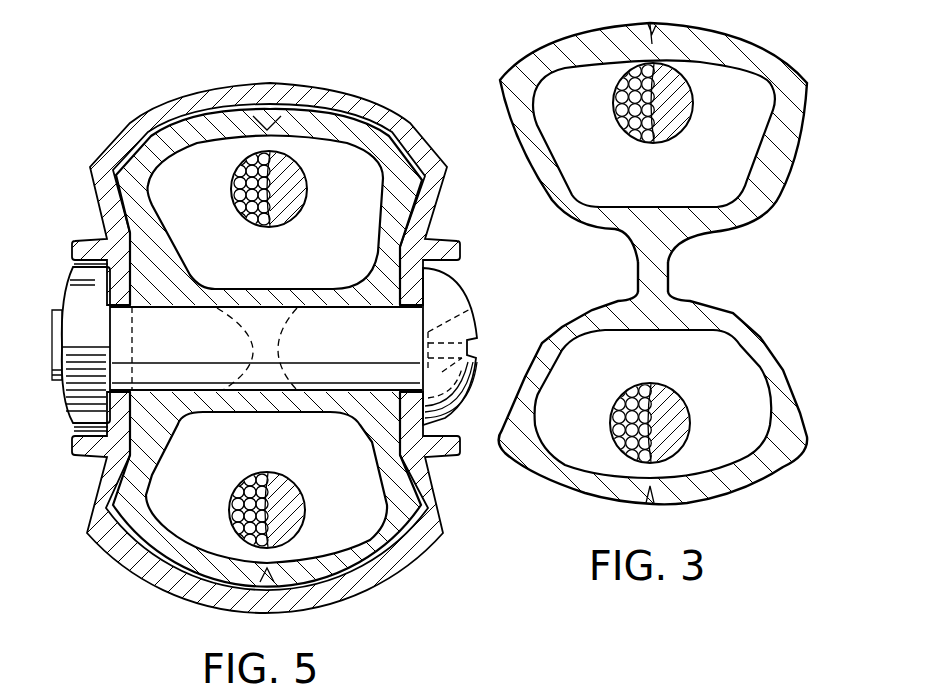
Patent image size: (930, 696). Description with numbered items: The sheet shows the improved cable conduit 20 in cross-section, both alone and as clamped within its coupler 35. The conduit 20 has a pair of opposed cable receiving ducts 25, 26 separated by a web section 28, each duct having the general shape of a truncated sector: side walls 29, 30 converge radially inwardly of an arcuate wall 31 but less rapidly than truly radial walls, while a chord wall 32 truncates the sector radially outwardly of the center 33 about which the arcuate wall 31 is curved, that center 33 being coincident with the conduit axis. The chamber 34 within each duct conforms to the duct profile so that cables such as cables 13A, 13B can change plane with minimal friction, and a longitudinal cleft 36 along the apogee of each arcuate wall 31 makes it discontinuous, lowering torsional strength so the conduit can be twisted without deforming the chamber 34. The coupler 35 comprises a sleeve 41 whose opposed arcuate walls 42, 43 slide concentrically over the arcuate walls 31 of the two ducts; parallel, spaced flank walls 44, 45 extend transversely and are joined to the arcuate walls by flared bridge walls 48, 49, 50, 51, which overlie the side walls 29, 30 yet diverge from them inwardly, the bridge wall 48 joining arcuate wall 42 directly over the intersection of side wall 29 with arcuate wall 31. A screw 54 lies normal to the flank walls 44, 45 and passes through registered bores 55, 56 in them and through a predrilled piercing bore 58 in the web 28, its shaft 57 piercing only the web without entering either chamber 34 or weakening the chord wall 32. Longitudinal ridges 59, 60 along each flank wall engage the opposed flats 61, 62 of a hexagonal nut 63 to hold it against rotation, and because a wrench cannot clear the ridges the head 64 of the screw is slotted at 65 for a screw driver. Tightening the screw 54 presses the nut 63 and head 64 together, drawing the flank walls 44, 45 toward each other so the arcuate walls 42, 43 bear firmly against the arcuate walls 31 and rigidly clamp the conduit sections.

In FIG. 3, the electrical cable 13A is at (678, 430).
In FIG. 5, the electrical cable 13A is at (300, 515).
In FIG. 3, the electrical cable 13B is at (620, 96).
In FIG. 5, the electrical cable 13B is at (307, 190).
In FIG. 3, the conduit 20 is at (740, 241).
In FIG. 5, the conduit 20 is at (395, 260).
In FIG. 3, the cable receiving duct 25 is at (797, 135).
In FIG. 5, the cable receiving duct 25 is at (402, 193).
In FIG. 3, the cable receiving duct 26 is at (780, 352).
In FIG. 5, the cable receiving duct 26 is at (407, 500).
In FIG. 3, the web section 28 is at (636, 276).
In FIG. 5, the web section 28 is at (283, 320).
In FIG. 3, the side wall 29 is at (540, 148).
In FIG. 5, the side wall 29 is at (159, 236).
In FIG. 3, the side wall 30 is at (762, 153).
In FIG. 5, the side wall 30 is at (377, 232).
In FIG. 3, the arcuate wall 31 is at (733, 42).
In FIG. 5, the arcuate wall 31 is at (366, 132).
In FIG. 3, the chord wall 32 is at (657, 213).
In FIG. 5, the chord wall 32 is at (233, 289).
In FIG. 3, the center 33 is at (655, 265).
In FIG. 5, the center 33 is at (268, 350).
In FIG. 3, the chamber 34 is at (654, 269).
In FIG. 5, the chamber 34 is at (266, 350).
In FIG. 5, the coupler 35 is at (190, 84).
In FIG. 3, the longitudinal cleft 36 is at (648, 40).
In FIG. 5, the longitudinal cleft 36 is at (266, 128).
In FIG. 5, the sleeve 41 is at (352, 84).
In FIG. 5, the arcuate wall 42 is at (291, 94).
In FIG. 5, the arcuate wall 43 is at (345, 590).
In FIG. 5, the flank wall 44 is at (130, 283).
In FIG. 5, the flank wall 45 is at (442, 407).
In FIG. 5, the bridge wall 48 is at (105, 196).
In FIG. 5, the bridge wall 49 is at (422, 206).
In FIG. 5, the bridge wall 50 is at (106, 490).
In FIG. 5, the bridge wall 51 is at (440, 525).
In FIG. 5, the screw 54 is at (460, 279).
In FIG. 5, the bore 55 is at (134, 377).
In FIG. 5, the bore 56 is at (398, 378).
In FIG. 5, the shaft 57 is at (266, 348).
In FIG. 5, the piercing bore 58 is at (236, 312).
In FIG. 5, the longitudinal ridge 59 is at (80, 241).
In FIG. 5, the longitudinal ridge 60 is at (457, 448).
In FIG. 5, the flat 61 is at (78, 264).
In FIG. 5, the flat 62 is at (77, 428).
In FIG. 5, the hexagonal nut 63 is at (81, 345).
In FIG. 5, the head 64 is at (447, 304).
In FIG. 5, the slot 65 is at (478, 350).